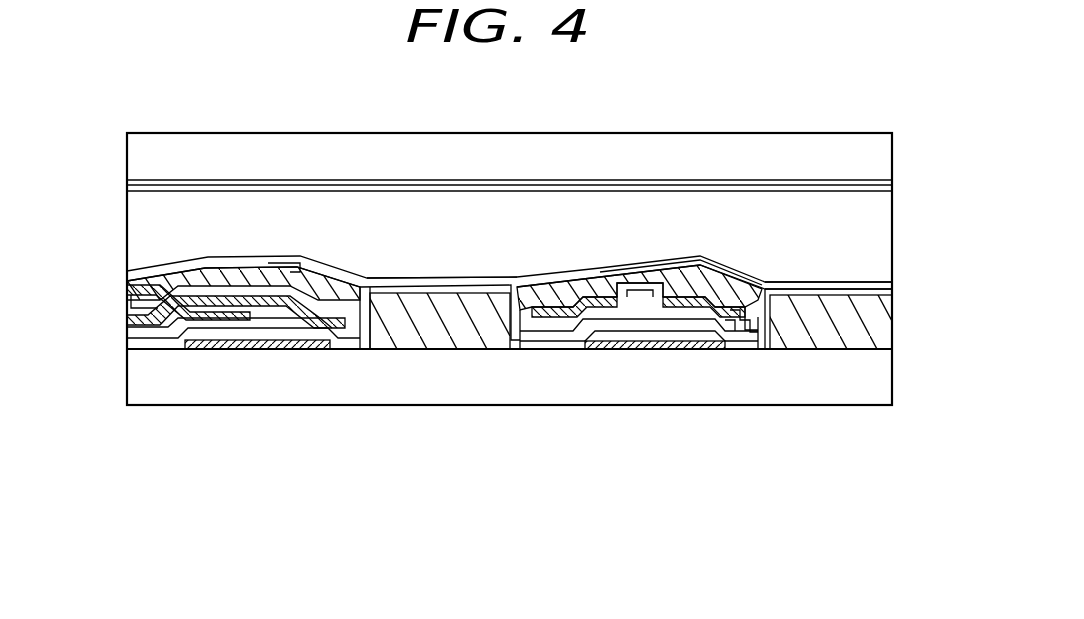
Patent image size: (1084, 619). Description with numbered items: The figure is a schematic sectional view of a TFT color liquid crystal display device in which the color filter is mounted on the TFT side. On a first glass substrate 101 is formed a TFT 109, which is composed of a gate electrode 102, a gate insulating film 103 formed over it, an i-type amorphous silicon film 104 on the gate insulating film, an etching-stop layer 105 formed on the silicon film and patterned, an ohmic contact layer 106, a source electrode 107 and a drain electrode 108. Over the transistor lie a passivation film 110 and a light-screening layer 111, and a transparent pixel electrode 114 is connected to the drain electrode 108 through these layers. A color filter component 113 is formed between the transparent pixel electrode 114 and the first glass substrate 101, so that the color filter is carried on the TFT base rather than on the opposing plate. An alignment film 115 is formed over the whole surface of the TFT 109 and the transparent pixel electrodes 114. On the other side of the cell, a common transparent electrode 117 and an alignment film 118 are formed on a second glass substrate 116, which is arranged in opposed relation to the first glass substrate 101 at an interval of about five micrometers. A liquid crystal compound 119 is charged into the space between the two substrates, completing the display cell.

The first glass substrate 101 is at (180, 399).
The gate electrode 102 is at (618, 350).
The gate insulating film 103 is at (527, 345).
The i-type amorphous silicon film 104 is at (673, 332).
The etching-stop layer 105 is at (643, 319).
The ohmic contact layer 106 is at (702, 322).
The source electrode 107 is at (562, 312).
The drain electrode 108 is at (742, 313).
The TFT 109 is at (518, 505).
The passivation film 110 is at (583, 300).
The light-screening layer 111 is at (656, 277).
The color filter component 113 is at (860, 347).
The transparent pixel electrode 114 is at (740, 285).
The alignment film 115 is at (842, 285).
The second glass substrate 116 is at (181, 139).
The common transparent electrode 117 is at (258, 184).
The alignment film 118 is at (330, 190).
The liquid crystal compound 119 is at (412, 200).